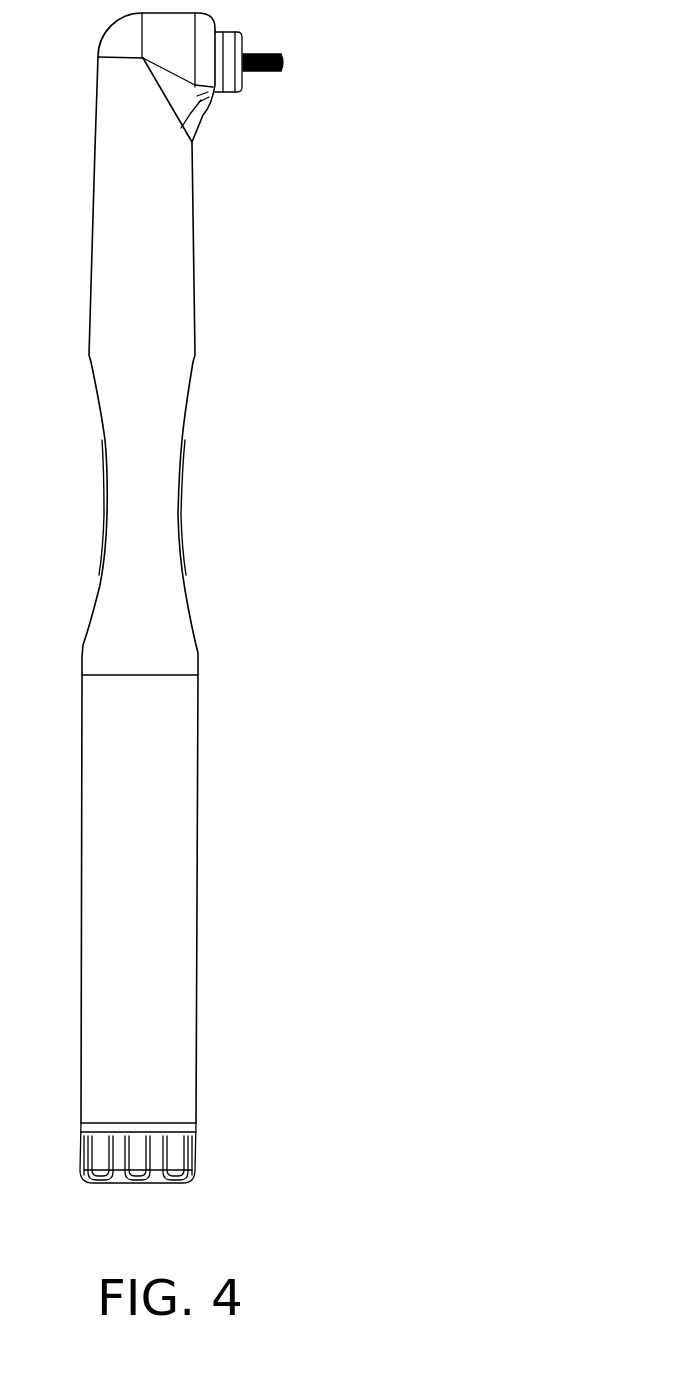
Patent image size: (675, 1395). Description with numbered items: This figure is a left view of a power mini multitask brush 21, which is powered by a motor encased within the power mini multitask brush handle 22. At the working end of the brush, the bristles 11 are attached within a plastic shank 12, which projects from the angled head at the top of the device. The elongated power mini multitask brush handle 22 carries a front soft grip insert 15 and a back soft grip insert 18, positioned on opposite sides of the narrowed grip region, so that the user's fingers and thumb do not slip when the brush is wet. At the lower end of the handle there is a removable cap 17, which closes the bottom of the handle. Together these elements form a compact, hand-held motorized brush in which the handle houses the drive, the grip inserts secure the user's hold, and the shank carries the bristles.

The bristles 11 is at (287, 66).
The plastic shank 12 is at (238, 75).
The front soft grip insert 15 is at (182, 455).
The removable cap 17 is at (172, 1157).
The back soft grip insert 18 is at (103, 478).
The power mini multitask brush 21 is at (285, 596).
The power mini multitask brush handle 22 is at (93, 933).